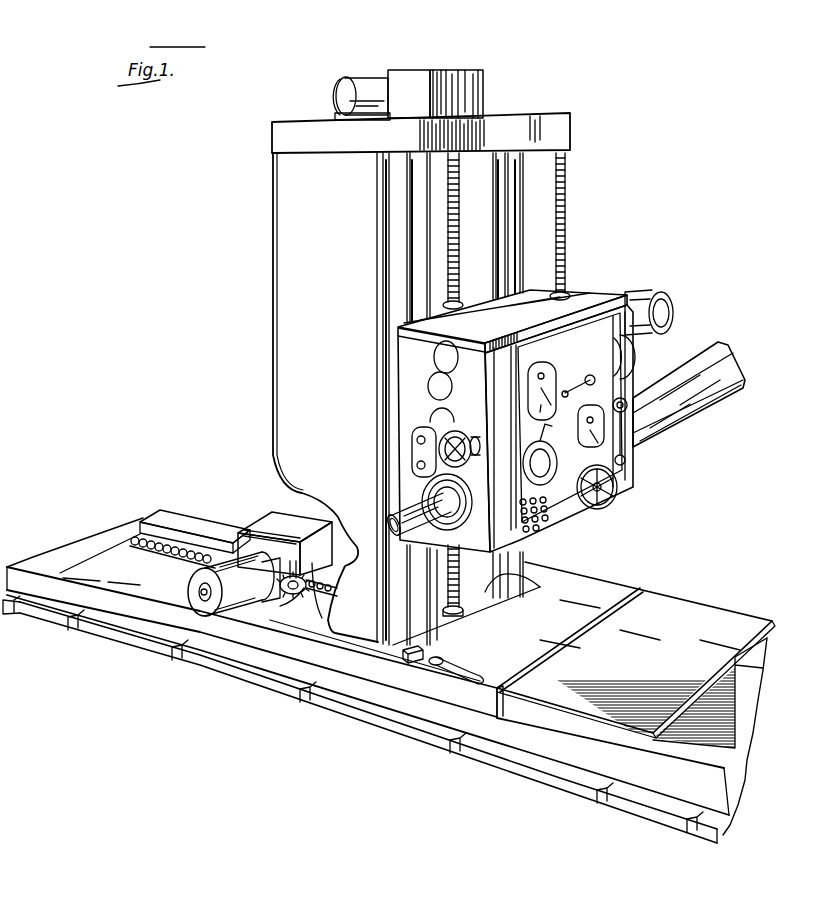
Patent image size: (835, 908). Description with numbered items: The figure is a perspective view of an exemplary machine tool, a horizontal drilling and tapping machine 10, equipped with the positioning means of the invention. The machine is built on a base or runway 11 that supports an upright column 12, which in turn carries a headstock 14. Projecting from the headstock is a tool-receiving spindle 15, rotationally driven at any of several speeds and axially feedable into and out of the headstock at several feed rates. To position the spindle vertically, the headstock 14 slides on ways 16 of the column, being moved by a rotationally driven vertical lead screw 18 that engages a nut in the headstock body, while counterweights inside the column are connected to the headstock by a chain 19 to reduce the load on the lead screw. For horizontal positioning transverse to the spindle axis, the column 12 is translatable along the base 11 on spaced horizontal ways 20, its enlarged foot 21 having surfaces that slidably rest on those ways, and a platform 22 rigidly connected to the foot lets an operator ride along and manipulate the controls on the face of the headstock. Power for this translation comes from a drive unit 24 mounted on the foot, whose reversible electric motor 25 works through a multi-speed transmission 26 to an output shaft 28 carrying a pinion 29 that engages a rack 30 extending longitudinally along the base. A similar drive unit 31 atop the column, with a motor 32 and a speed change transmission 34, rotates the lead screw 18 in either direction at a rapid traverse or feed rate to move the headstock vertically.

The horizontal drilling and tapping machine 10 is at (603, 226).
The base or runway 11 is at (88, 643).
The upright column 12 is at (266, 348).
The headstock 14 is at (612, 290).
The tool-receiving spindle 15 is at (478, 520).
The ways 16 is at (512, 224).
The vertical lead screw 18 is at (458, 187).
The chain 19 is at (566, 203).
The horizontal ways 20 is at (118, 506).
The enlarged foot 21 is at (516, 690).
The platform 22 is at (655, 620).
The drive unit 24 is at (250, 518).
The electric motor 25 is at (154, 603).
The multi-speed transmission 26 is at (278, 516).
The output shaft 28 is at (316, 548).
The pinion 29 is at (297, 594).
The rack 30 is at (170, 556).
The drive unit 31 is at (407, 66).
The motor 32 is at (370, 80).
The speed change transmission 34 is at (462, 74).